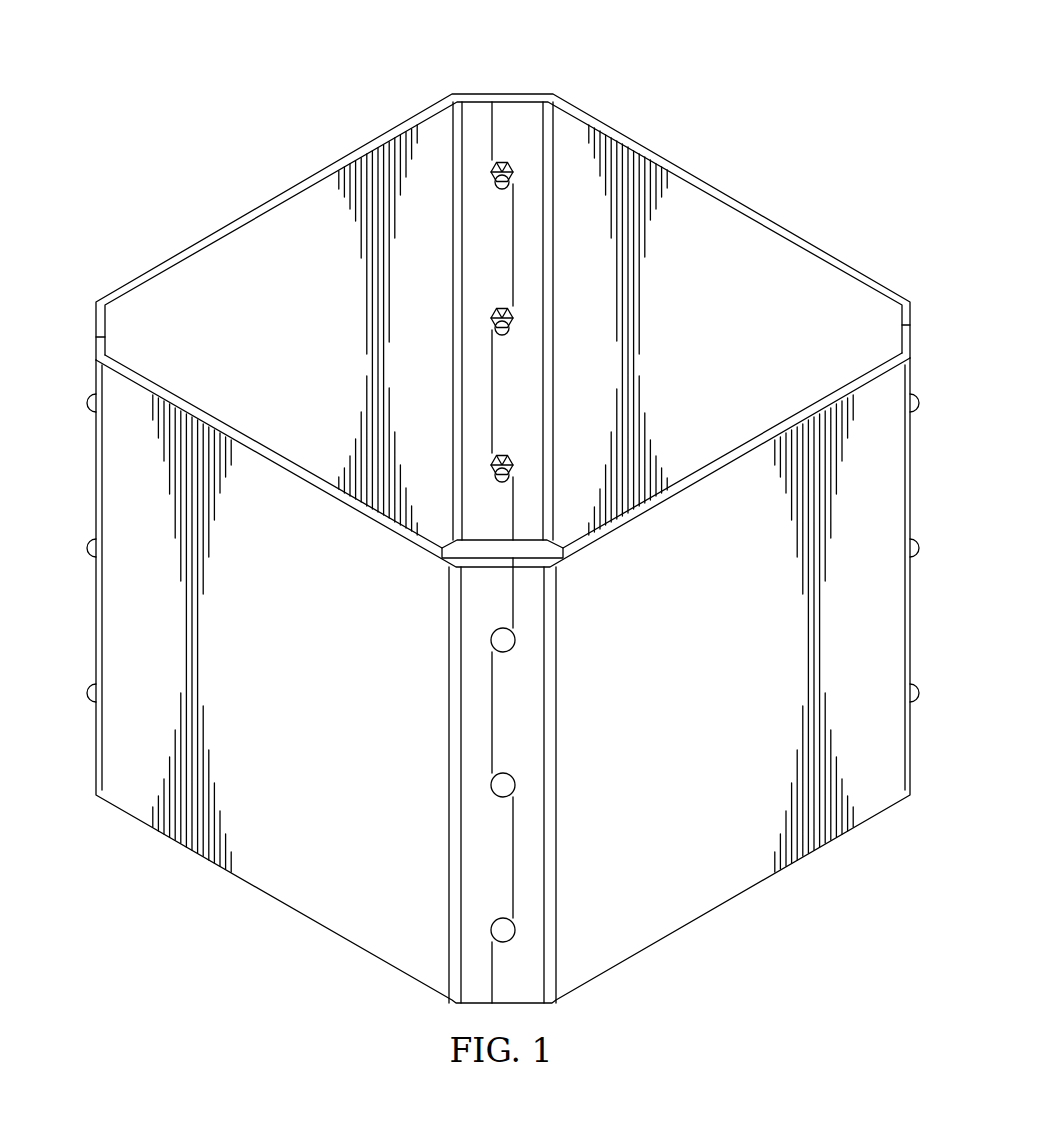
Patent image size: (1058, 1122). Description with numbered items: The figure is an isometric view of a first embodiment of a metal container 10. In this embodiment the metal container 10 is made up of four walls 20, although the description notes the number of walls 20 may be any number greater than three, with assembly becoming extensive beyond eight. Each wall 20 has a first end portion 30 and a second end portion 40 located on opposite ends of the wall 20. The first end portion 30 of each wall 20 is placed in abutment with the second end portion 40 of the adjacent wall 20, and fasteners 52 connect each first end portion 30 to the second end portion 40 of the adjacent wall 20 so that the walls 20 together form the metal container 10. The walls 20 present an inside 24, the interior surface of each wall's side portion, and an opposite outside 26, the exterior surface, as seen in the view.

The metal container 10 is at (274, 66).
The wall 20 is at (692, 172).
The inside 24 is at (306, 337).
The outside 26 is at (257, 700).
The first end portion 30 is at (478, 108).
The second end portion 40 is at (526, 108).
The fastener 52 is at (505, 652).